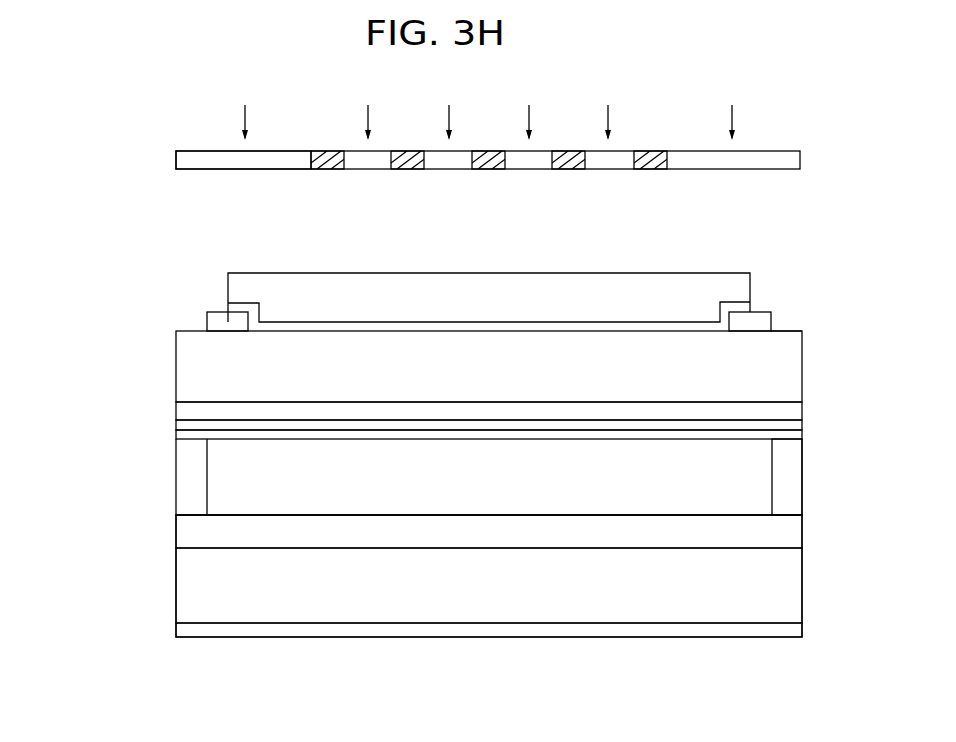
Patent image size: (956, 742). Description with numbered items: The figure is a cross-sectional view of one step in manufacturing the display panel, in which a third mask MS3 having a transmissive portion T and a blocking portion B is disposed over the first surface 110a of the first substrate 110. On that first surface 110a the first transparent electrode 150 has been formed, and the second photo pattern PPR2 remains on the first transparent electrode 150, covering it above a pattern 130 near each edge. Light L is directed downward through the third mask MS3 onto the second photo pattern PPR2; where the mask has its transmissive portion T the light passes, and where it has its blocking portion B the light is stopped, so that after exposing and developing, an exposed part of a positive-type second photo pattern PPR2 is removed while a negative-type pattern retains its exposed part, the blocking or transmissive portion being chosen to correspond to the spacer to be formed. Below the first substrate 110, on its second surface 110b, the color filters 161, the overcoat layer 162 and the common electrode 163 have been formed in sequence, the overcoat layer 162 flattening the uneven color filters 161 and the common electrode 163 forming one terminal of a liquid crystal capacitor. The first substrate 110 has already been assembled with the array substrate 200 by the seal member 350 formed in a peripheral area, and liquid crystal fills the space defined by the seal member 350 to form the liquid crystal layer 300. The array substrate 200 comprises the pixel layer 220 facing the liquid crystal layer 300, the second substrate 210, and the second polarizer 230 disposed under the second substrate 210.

The third mask MS3 is at (187, 164).
The transmissive portion T is at (227, 162).
The blocking portion B is at (327, 162).
The light L is at (488, 122).
The second photo pattern PPR2 is at (237, 284).
The first transparent electrode 150 is at (233, 307).
The pattern 130 is at (217, 322).
The first substrate 110 is at (185, 362).
The first surface 110a is at (784, 328).
The second surface 110b is at (741, 400).
The color filters 161 is at (188, 410).
The overcoat layer 162 is at (185, 428).
The common electrode 163 is at (185, 435).
The liquid crystal layer 300 is at (218, 491).
The seal member 350 is at (785, 504).
The array substrate 200 is at (80, 515).
The pixel layer 220 is at (188, 532).
The second substrate 210 is at (188, 577).
The second polarizer 230 is at (188, 628).